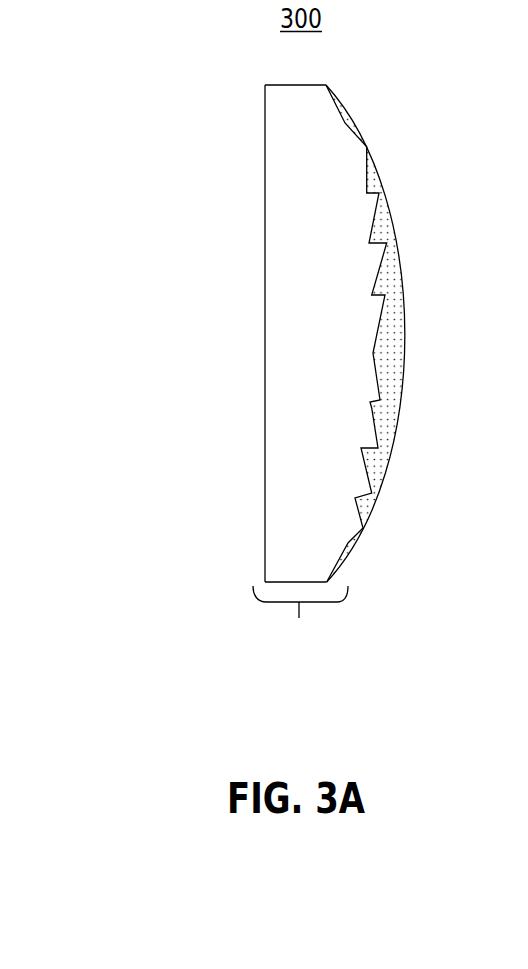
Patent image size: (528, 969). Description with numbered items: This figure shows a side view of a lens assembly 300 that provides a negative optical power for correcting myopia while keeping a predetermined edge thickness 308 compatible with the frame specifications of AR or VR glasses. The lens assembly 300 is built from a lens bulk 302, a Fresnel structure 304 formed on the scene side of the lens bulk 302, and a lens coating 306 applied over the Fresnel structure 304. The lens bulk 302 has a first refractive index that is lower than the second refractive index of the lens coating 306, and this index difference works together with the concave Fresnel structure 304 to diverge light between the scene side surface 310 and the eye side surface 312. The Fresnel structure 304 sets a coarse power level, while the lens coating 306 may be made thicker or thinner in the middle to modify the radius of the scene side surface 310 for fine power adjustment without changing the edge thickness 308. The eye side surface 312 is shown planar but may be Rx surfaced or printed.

The lens assembly 300 is at (332, 365).
The lens bulk 302 is at (265, 333).
The Fresnel structure 304 is at (370, 407).
The lens coating 306 is at (388, 282).
The edge thickness 308 is at (300, 616).
The scene side surface 310 is at (407, 355).
The eye side surface 312 is at (258, 357).